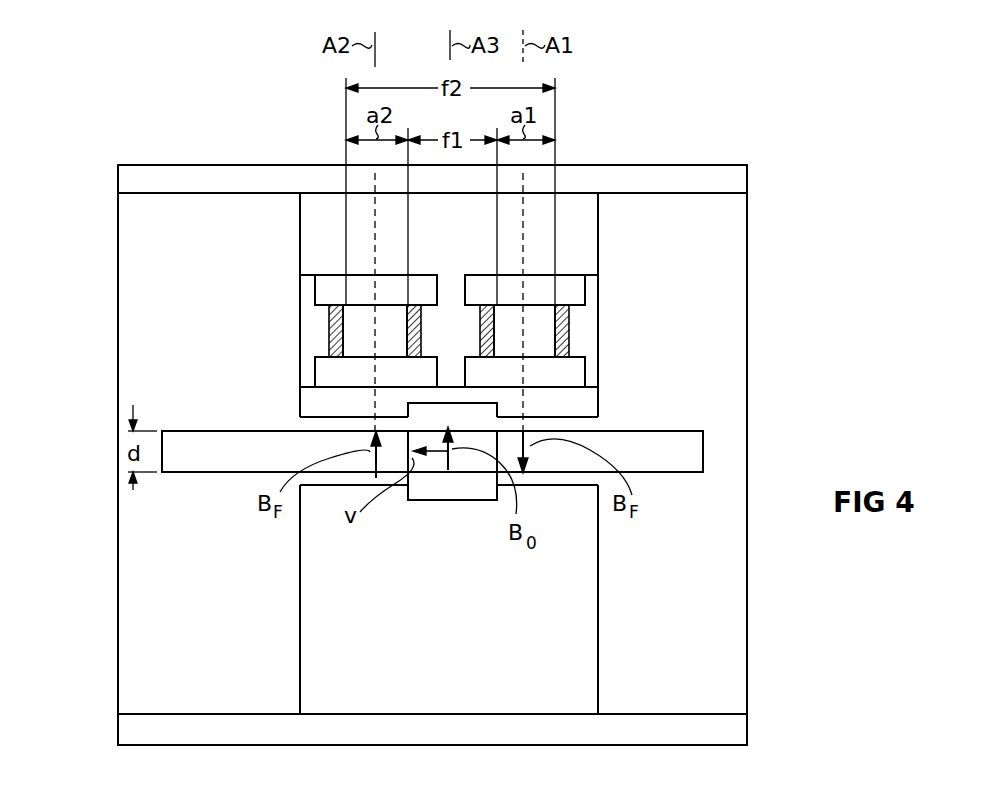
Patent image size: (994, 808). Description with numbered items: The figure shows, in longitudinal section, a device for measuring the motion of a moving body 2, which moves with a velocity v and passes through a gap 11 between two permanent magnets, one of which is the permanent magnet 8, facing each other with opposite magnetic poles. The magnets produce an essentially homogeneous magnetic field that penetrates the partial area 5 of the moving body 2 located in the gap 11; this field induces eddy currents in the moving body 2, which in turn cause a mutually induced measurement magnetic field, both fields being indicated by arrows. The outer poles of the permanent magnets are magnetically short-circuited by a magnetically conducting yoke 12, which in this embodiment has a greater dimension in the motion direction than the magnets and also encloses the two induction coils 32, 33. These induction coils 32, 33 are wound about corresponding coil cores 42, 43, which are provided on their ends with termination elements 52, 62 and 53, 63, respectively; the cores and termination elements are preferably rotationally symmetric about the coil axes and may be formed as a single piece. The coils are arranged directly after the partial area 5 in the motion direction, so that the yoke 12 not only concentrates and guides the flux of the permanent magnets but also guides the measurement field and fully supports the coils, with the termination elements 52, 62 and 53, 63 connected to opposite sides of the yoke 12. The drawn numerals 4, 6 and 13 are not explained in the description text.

The moving body 2 is at (685, 456).
The upper surface of strip 4 is at (680, 430).
The partial area 5 is at (468, 465).
The strip portion 6 is at (215, 460).
The permanent magnet 8 is at (434, 500).
The gap 11 is at (590, 425).
The yoke 12 is at (583, 230).
The housing plate 13 is at (732, 180).
The induction coil 32 is at (569, 322).
The induction coil 33 is at (329, 321).
The coil core 42 is at (535, 337).
The coil core 43 is at (363, 338).
The termination element 52 is at (565, 371).
The termination element 53 is at (330, 374).
The termination element 62 is at (568, 290).
The termination element 63 is at (326, 291).